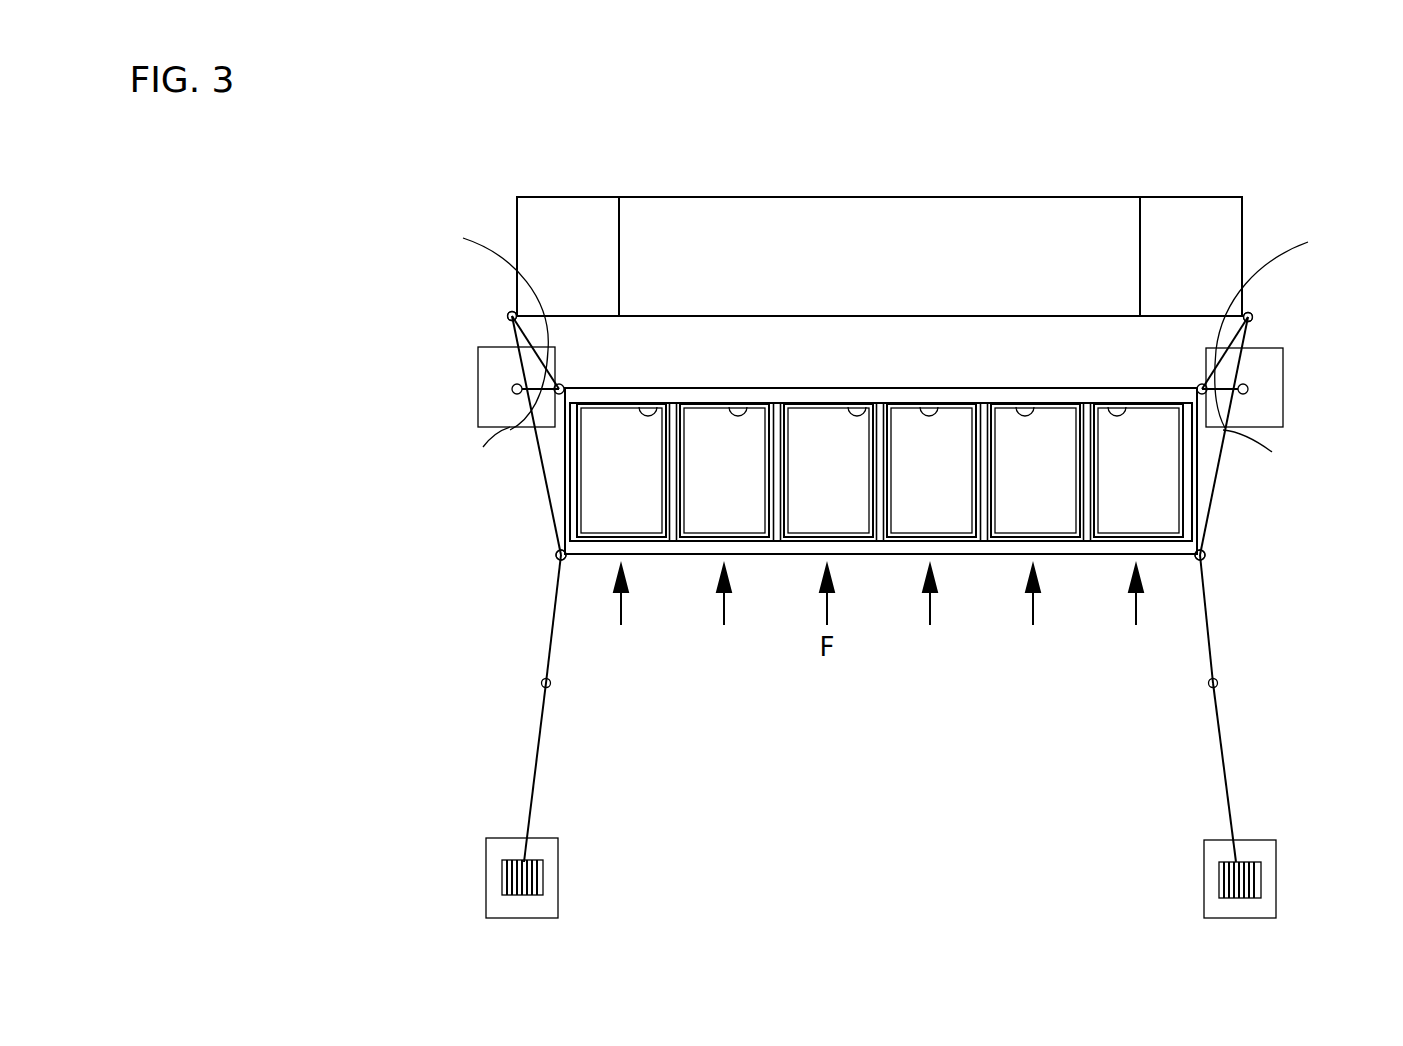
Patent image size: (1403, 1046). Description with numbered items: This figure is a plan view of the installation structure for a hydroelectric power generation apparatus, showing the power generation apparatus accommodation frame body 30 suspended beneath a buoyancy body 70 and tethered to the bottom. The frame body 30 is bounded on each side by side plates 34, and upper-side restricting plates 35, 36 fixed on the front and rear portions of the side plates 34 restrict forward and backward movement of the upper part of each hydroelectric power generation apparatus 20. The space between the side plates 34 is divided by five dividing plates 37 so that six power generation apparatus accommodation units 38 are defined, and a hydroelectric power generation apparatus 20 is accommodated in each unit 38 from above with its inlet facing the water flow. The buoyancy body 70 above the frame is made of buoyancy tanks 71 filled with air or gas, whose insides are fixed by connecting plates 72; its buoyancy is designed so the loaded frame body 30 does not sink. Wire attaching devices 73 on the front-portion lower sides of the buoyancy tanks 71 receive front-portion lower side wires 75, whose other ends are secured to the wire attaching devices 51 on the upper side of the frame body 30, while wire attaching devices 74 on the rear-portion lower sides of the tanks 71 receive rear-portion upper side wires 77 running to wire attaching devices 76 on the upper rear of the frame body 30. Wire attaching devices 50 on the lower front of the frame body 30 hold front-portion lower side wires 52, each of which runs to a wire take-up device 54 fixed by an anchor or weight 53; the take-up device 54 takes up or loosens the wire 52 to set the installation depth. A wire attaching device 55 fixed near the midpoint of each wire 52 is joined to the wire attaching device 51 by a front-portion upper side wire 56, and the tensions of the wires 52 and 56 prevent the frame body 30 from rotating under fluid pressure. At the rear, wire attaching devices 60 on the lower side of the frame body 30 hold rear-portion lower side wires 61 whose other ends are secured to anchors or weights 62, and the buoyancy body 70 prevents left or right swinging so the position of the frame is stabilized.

The buoyancy body 70 is at (1003, 190).
The buoyancy tank 71 is at (572, 218).
The connecting plate 72 is at (875, 230).
The wire attaching device 73 is at (512, 316).
The wire attaching device 74 is at (879, 306).
The rear-portion upper side wire 77 is at (886, 320).
The wire attaching device 76 is at (559, 388).
The wire attaching device 60 is at (880, 371).
The anchor or weight 62 is at (492, 388).
The rear-portion lower side wire 61 is at (878, 448).
The front-portion lower side wire 75 is at (542, 463).
The side plate 34 is at (571, 490).
The power generation apparatus accommodation frame body 30 is at (790, 575).
The upper-side restricting plate 36 is at (958, 398).
The upper-side restricting plate 35 is at (1003, 553).
The hydroelectric power generation apparatus 20 is at (628, 522).
The dividing plate 37 is at (773, 487).
The power generation apparatus accommodation unit 38 is at (648, 403).
The wire attaching device 51 is at (561, 555).
The wire attaching device 50 is at (885, 580).
The front-portion upper side wire 56 is at (557, 615).
The wire attaching device 55 is at (550, 683).
The front-portion lower side wire 52 is at (542, 747).
The anchor or weight 53 is at (552, 865).
The wire take-up device 54 is at (542, 883).